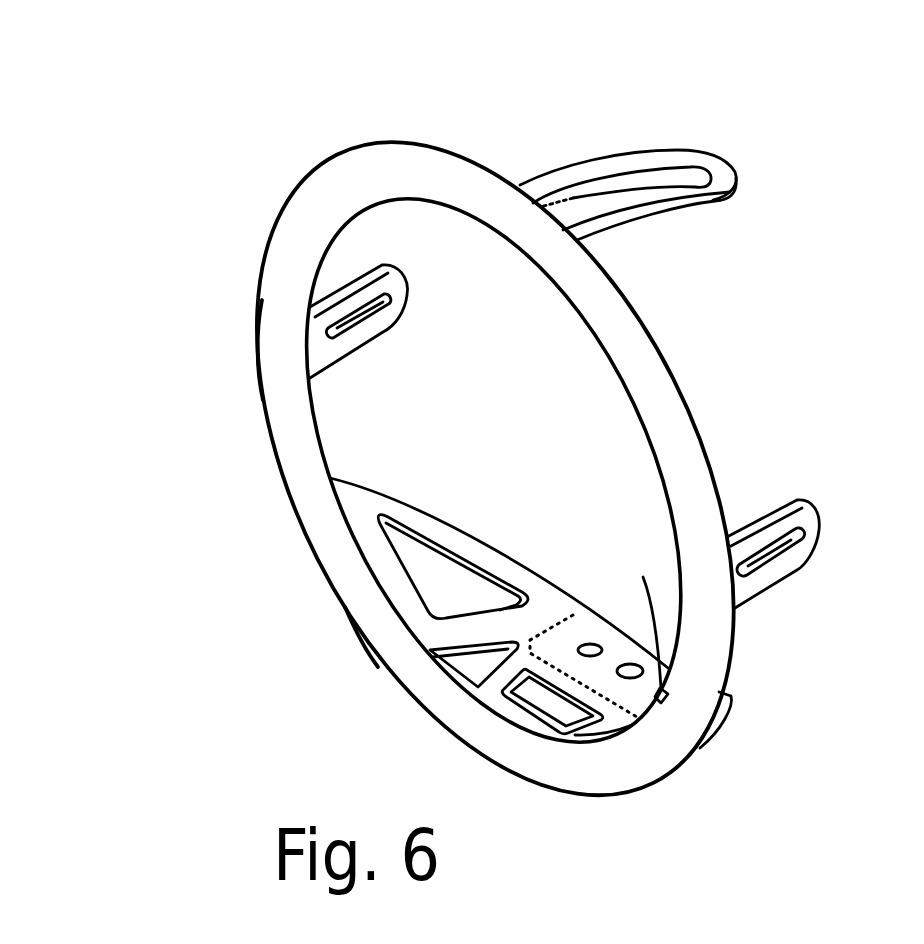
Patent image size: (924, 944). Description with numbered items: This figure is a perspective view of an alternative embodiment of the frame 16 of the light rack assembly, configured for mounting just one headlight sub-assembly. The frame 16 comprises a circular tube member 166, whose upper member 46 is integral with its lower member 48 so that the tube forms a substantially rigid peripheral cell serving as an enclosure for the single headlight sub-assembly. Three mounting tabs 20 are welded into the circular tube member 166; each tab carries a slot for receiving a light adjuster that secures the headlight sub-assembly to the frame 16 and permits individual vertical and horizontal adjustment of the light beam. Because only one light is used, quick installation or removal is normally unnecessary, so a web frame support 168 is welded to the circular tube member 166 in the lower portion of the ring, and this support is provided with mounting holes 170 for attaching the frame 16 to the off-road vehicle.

The frame 16 is at (367, 158).
The mounting tabs 20 is at (660, 151).
The upper member 46 is at (447, 160).
The lower member 48 is at (375, 640).
The circular tube member 166 is at (272, 448).
The web frame support 168 is at (446, 512).
The mounting holes 170 is at (627, 664).